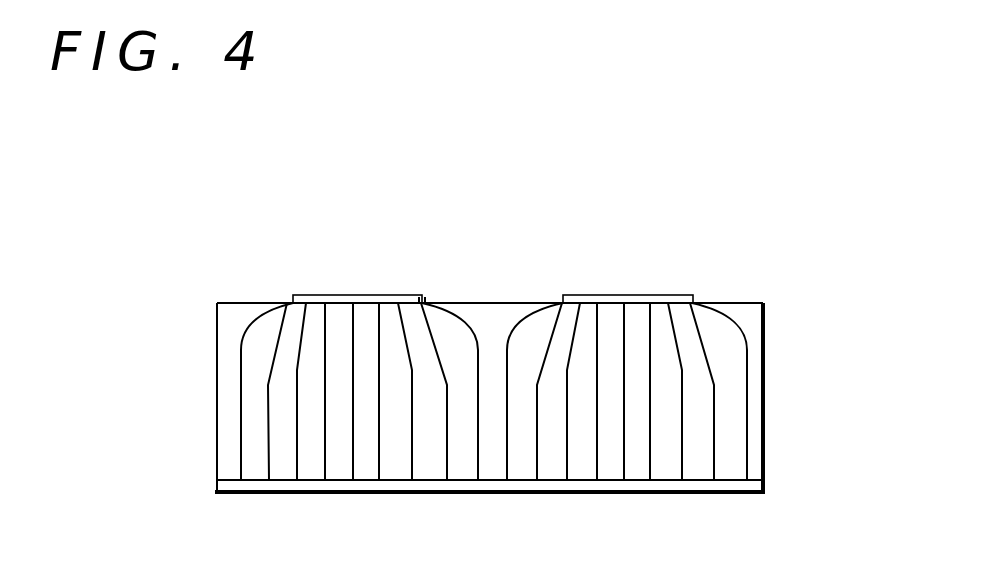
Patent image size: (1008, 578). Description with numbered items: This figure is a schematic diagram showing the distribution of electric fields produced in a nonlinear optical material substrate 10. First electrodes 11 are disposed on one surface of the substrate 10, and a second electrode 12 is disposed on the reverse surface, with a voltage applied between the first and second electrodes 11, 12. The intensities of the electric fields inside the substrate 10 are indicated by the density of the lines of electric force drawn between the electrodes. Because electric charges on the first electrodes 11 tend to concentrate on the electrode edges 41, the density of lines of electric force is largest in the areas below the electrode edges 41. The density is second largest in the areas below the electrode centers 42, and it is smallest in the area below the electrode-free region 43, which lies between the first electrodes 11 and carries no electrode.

The nonlinear optical material substrate 10 is at (745, 392).
The first electrodes 11 is at (674, 295).
The second electrode 12 is at (732, 487).
The electrode edges 41 is at (423, 300).
The electrode centers 42 is at (373, 297).
The electrode-free region 43 is at (500, 303).